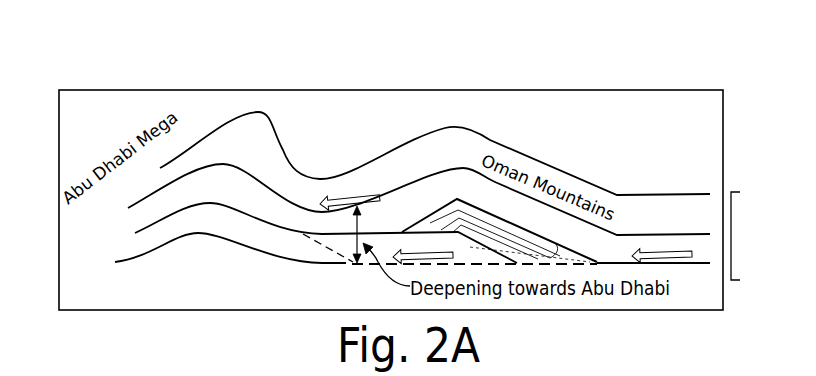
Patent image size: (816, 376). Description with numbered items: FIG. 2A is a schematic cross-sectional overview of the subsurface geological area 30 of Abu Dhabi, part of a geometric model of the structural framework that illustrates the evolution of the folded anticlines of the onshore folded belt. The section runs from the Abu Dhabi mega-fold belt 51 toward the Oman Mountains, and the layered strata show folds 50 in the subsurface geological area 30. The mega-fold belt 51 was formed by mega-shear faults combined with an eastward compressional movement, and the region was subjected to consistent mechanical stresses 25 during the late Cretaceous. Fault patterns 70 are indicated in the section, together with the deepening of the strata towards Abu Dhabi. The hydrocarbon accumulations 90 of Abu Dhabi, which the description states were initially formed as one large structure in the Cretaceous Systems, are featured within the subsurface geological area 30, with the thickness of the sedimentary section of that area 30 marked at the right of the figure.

The folds 50 is at (257, 127).
The Abu Dhabi mega-fold belt 51 is at (399, 203).
The mechanical stresses 25 is at (326, 137).
The fault patterns 70 is at (363, 180).
The hydrocarbon accumulations 90 is at (500, 238).
The subsurface geological area 30 is at (744, 236).